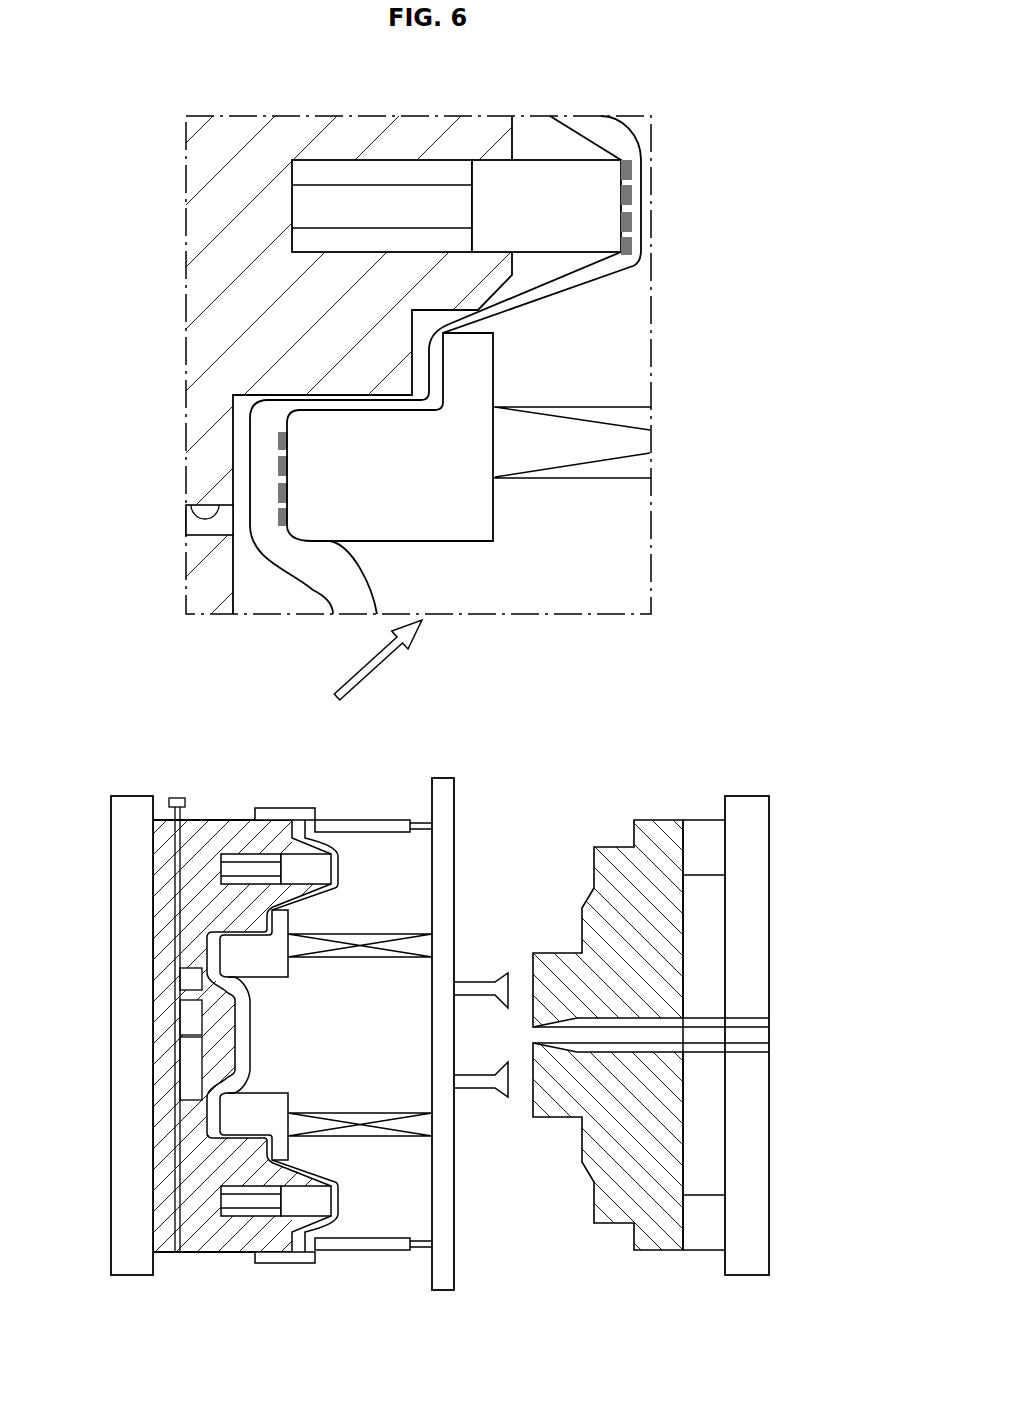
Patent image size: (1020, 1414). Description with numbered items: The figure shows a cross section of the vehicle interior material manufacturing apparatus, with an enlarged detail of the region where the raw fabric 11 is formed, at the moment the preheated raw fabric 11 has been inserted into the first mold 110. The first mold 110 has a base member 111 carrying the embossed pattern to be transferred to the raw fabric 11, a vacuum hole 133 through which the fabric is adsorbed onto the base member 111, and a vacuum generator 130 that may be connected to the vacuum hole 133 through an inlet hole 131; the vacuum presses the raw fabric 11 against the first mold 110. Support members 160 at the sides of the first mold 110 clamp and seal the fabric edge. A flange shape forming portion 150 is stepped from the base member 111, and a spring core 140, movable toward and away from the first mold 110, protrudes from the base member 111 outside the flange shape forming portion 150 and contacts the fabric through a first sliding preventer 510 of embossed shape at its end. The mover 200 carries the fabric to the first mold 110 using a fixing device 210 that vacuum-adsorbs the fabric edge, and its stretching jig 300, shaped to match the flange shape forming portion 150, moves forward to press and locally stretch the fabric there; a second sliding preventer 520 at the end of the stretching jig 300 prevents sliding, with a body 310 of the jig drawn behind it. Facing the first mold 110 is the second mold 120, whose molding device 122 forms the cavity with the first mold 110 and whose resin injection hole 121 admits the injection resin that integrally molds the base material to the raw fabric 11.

The raw fabric 11 is at (327, 585).
The first mold 110 is at (372, 120).
The base member 111 is at (214, 1078).
The second mold 120 is at (688, 773).
The resin injection hole 121 is at (734, 1043).
The molding device 122 is at (583, 932).
The vacuum generator 130 is at (178, 798).
The inlet hole 131 is at (212, 900).
The vacuum hole 133 is at (206, 507).
The spring core 140 is at (540, 172).
The flange shape forming portion 150 is at (438, 388).
The support member 160 is at (280, 814).
The mover 200 is at (452, 772).
The fixing device 210 is at (393, 826).
The stretching jig 300 is at (612, 406).
The insert body 310 is at (436, 362).
The first sliding preventer 510 is at (632, 166).
The second sliding preventer 520 is at (285, 442).